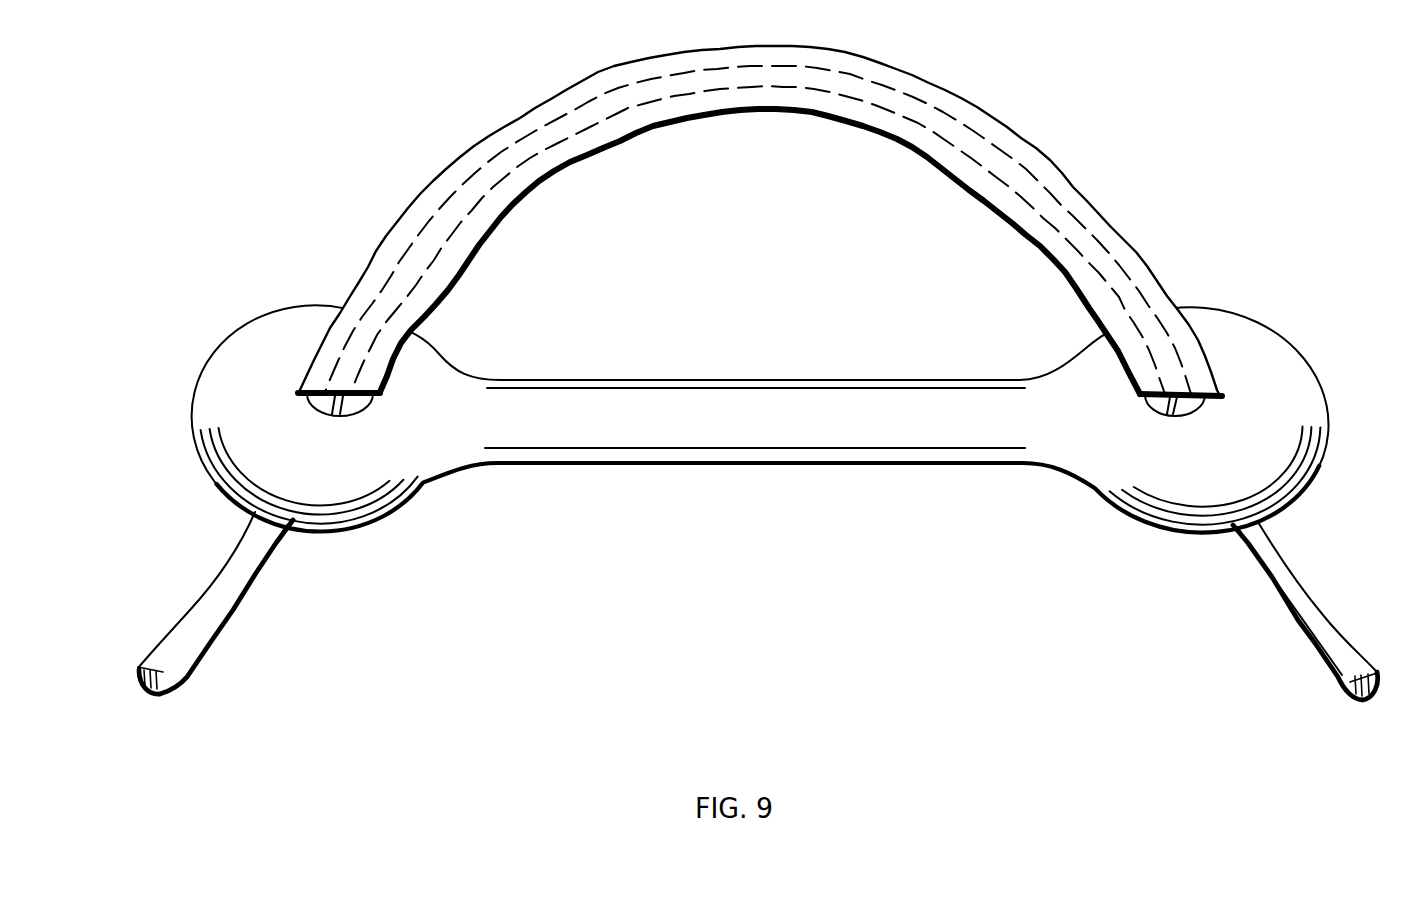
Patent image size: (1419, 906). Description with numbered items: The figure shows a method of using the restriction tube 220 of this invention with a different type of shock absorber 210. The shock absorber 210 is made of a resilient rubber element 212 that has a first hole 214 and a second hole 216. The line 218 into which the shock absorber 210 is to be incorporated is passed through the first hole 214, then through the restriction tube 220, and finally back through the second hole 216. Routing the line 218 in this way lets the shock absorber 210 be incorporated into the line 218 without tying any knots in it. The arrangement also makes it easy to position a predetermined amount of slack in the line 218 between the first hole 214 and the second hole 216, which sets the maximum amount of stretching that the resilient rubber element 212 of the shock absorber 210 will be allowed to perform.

The shock absorber 210 is at (796, 579).
The resilient rubber element 212 is at (757, 397).
The first hole 214 is at (1207, 399).
The second hole 216 is at (307, 398).
The line 218 is at (1310, 607).
The restriction tube 220 is at (1108, 222).